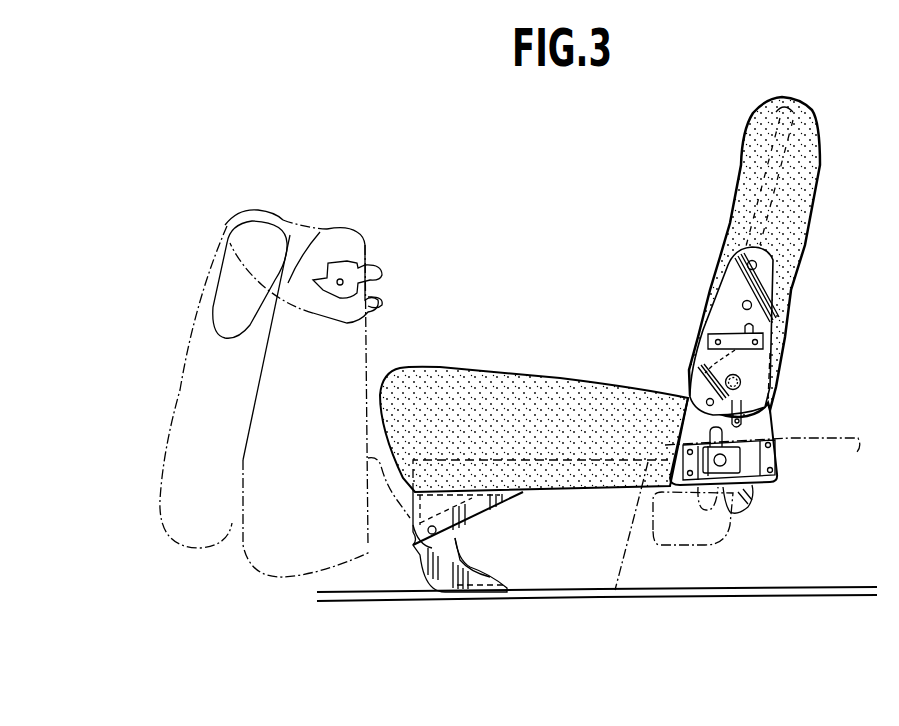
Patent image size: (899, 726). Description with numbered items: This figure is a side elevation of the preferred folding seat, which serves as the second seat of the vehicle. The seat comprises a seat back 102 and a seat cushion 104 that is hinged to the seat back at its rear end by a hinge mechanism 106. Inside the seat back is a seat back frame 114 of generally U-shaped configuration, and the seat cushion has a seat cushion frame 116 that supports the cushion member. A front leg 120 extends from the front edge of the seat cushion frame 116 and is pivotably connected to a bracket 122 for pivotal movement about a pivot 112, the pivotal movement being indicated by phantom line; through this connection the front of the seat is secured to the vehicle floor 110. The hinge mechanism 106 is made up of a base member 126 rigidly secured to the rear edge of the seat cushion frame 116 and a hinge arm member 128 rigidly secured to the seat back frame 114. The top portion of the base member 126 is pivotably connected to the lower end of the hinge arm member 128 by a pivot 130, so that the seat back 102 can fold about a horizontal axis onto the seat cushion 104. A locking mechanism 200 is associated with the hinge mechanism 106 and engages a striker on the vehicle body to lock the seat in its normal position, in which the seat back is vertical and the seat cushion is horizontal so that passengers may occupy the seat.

The seat back 102 is at (821, 171).
The seat cushion 104 is at (575, 390).
The hinge mechanism 106 is at (782, 357).
The vehicle floor 110 is at (661, 586).
The pivot 112 is at (421, 545).
The seat back frame 114 is at (770, 235).
The seat cushion frame 116 is at (568, 480).
The front leg 120 is at (480, 511).
The bracket 122 is at (452, 582).
The base member 126 is at (764, 428).
The hinge arm member 128 is at (770, 303).
The pivot 130 is at (742, 383).
The locking mechanism 200 is at (745, 459).